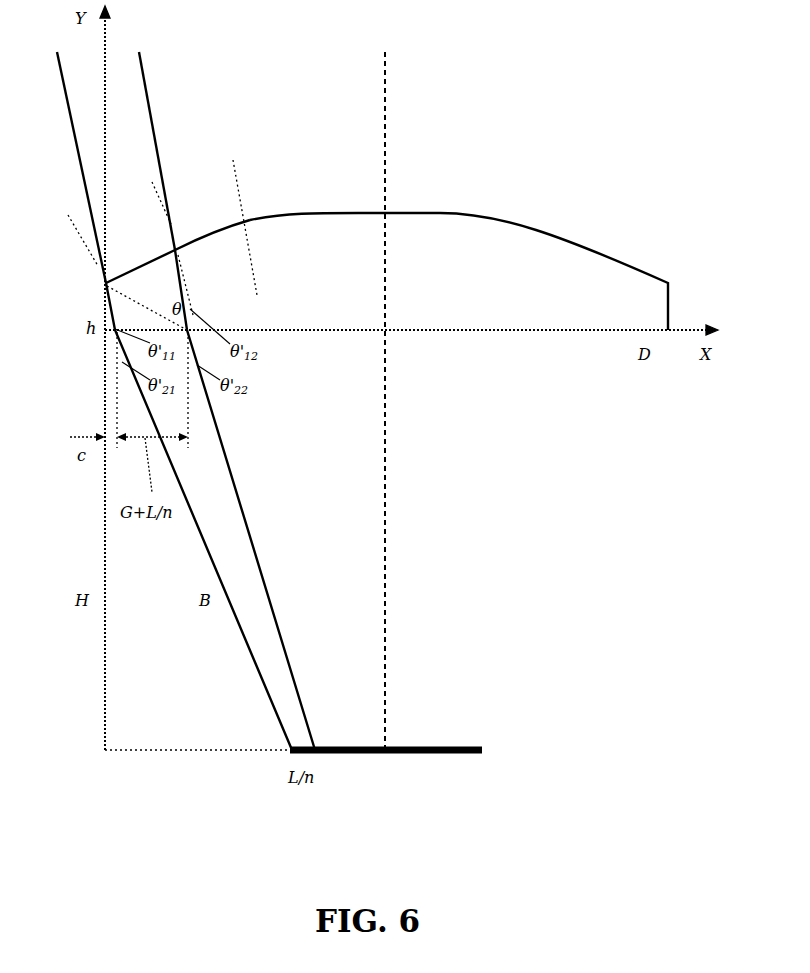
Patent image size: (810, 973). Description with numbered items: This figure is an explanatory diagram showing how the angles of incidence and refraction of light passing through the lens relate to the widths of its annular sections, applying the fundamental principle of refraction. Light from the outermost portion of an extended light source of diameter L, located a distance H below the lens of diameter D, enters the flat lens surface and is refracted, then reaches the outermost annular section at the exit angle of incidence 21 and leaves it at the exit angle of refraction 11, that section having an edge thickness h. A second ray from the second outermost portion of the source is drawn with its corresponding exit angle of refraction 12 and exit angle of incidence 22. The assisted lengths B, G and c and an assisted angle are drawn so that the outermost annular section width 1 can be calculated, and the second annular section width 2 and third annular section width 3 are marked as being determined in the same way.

The width m1 of outermost annular section 1 is at (140, 262).
The second lens surface segment m2 2 is at (212, 232).
The third lens surface segment m3 3 is at (459, 263).
The angles θ11 and θ'11 of light from outermost portion of light source 11 is at (95, 255).
The second incident light ray 12 is at (167, 220).
The angles θ21 and θ'21 of light from outermost portion of light source 21 is at (106, 297).
The angle of incidence θ'22 of light from second outermost portion of light source 22 is at (184, 288).